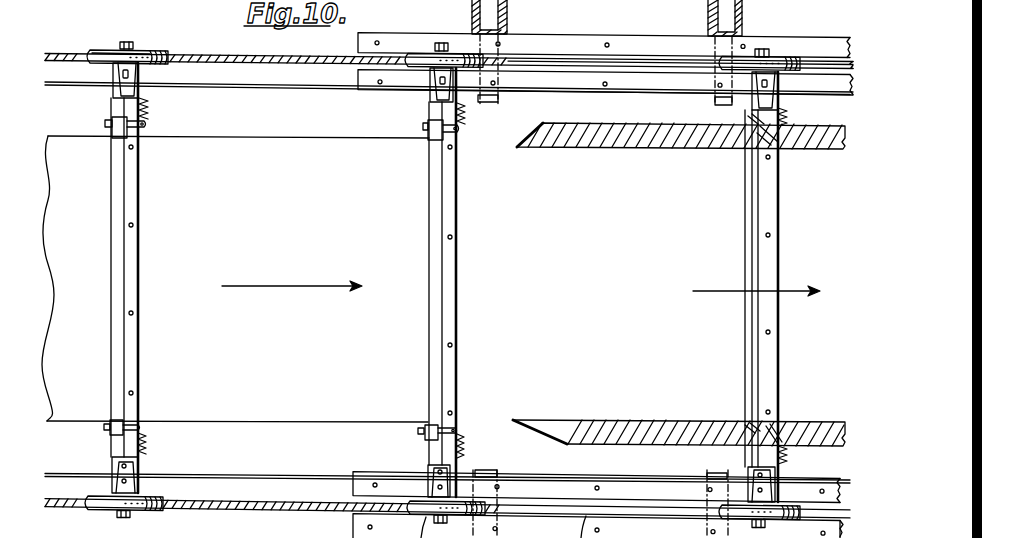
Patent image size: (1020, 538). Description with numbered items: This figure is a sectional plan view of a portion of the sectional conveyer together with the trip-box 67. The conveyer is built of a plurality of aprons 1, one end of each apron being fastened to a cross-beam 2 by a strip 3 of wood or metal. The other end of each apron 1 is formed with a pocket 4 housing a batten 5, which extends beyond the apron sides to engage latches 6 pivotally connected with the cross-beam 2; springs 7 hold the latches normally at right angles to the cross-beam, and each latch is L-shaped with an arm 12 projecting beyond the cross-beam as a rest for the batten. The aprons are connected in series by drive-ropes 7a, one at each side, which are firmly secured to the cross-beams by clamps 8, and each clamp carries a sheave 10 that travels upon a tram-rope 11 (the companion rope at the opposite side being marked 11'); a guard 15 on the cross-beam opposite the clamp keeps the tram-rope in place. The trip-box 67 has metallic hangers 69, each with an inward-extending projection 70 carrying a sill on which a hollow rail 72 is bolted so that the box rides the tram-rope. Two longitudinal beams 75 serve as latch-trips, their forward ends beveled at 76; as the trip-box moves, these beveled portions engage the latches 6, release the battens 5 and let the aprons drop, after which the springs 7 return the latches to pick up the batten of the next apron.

The apron 1 is at (431, 279).
The cross-beam 2 is at (428, 448).
The strip 3 is at (453, 290).
The pocket 4 is at (428, 201).
The batten 5 is at (433, 134).
The latch 6 is at (422, 126).
The spring 7 is at (142, 447).
The drive-rope 7a is at (252, 85).
The clamp 8 is at (139, 470).
The sheave 10 is at (792, 58).
The tram-rope 11 is at (449, 49).
The lower threaded rod 11' is at (447, 515).
The arm 12 is at (451, 428).
The guard 15 is at (433, 492).
The trip-box 67 is at (605, 55).
The hanger 69 is at (512, 18).
The projection 70 is at (480, 102).
The hollow rail 72 is at (652, 58).
The longitudinal beam 75 is at (688, 148).
The beveled portion 76 is at (544, 133).